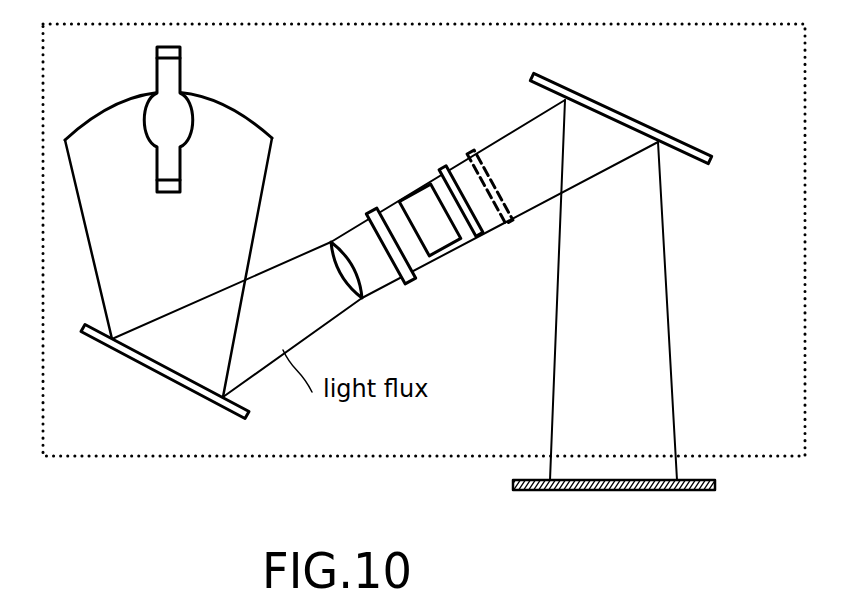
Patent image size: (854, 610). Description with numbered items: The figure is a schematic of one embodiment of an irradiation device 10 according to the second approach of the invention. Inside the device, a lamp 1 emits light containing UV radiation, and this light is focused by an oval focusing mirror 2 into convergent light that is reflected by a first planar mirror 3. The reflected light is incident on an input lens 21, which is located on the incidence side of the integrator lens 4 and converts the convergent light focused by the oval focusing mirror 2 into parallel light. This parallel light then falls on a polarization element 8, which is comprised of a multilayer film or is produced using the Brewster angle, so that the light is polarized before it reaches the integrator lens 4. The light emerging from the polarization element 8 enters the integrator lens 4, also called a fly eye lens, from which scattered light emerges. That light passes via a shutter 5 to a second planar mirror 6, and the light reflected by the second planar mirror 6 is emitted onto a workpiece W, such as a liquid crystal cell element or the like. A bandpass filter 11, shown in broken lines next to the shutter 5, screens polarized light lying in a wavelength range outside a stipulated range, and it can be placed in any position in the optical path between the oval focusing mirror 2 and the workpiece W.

The lamp 1 is at (182, 72).
The oval focusing mirror 2 is at (271, 126).
The first planar mirror 3 is at (147, 368).
The input lens 21 is at (333, 243).
The polarization element 8 is at (413, 283).
The integrator lens 4 is at (413, 192).
The shutter 5 is at (440, 170).
The bandpass filter 11 is at (515, 223).
The second planar mirror 6 is at (642, 123).
The workpiece W is at (707, 480).
The irradiation device 10 is at (82, 458).